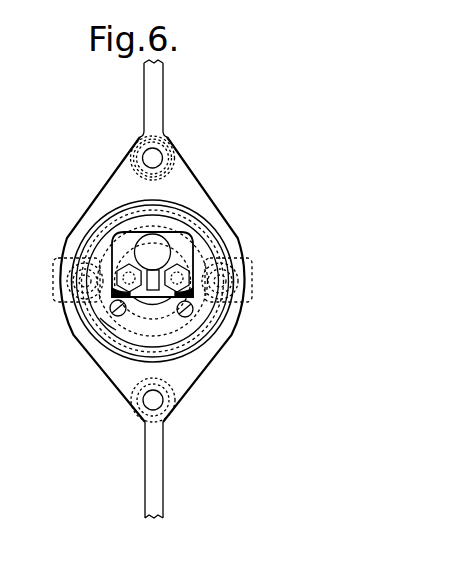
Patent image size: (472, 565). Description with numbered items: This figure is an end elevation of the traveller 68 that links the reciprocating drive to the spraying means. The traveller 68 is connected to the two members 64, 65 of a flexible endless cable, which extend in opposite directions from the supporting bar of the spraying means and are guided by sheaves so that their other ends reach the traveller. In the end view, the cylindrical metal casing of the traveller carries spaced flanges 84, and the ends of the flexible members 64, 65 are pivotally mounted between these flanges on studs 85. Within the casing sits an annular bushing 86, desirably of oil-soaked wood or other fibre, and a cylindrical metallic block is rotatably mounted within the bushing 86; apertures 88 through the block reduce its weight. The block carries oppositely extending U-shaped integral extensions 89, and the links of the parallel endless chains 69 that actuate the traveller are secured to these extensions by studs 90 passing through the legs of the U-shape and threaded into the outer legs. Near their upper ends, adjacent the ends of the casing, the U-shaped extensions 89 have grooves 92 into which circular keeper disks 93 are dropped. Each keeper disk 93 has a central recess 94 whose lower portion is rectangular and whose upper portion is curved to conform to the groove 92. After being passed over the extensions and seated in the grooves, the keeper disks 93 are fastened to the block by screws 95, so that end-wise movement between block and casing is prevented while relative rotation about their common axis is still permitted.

The flexible member 64 is at (159, 480).
The flexible member 65 is at (157, 105).
The traveller 68 is at (221, 353).
The endless chain 69 is at (242, 292).
The flange 84 is at (133, 168).
The stud 85 is at (155, 158).
The annular bushing 86 is at (200, 262).
The aperture 88 is at (148, 244).
The U-shaped extension 89 is at (120, 240).
The stud 90 is at (122, 270).
The groove 92 is at (205, 210).
The keeper disk 93 is at (107, 323).
The central recess 94 is at (150, 297).
The screw 95 is at (112, 307).